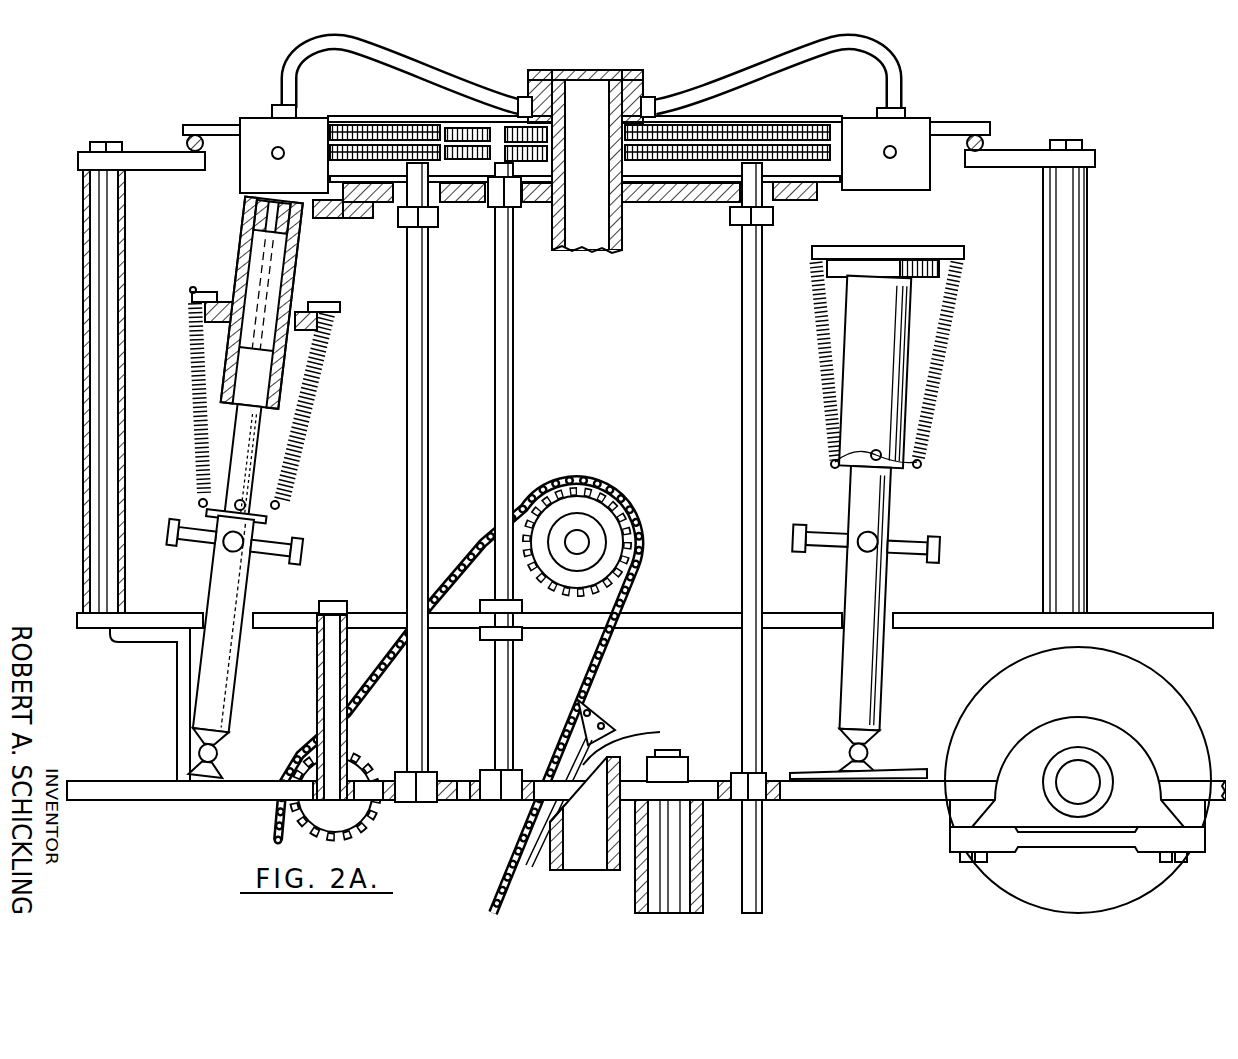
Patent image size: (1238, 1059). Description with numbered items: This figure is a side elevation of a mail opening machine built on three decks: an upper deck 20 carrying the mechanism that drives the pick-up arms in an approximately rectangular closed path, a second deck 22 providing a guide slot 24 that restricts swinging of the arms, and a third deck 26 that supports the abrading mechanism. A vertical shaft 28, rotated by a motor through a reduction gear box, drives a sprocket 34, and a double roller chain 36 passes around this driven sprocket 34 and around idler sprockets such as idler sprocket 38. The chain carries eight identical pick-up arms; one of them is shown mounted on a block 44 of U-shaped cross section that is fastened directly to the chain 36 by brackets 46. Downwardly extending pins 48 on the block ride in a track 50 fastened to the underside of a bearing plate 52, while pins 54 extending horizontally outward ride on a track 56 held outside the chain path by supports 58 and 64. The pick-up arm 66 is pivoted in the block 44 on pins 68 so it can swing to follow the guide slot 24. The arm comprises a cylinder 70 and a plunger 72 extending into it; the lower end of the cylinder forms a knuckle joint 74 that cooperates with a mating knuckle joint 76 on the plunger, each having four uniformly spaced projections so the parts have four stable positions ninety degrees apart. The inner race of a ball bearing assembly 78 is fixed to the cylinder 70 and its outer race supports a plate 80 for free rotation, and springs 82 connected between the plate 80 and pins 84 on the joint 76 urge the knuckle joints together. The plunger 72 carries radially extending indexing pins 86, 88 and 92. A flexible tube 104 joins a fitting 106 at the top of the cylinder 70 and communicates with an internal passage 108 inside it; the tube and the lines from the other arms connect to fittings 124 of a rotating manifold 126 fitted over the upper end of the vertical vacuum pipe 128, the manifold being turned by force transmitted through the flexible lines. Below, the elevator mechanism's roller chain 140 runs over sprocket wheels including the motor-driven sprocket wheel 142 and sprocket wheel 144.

The upper deck 20 is at (72, 130).
The second deck 22 is at (62, 600).
The guide slot 24 is at (848, 604).
The third deck 26 is at (112, 758).
The vertical shaft 28 is at (762, 375).
The driven sprocket 34 is at (842, 178).
The double roller chain 36 is at (660, 195).
The idler sprocket 38 is at (476, 192).
The block 44 is at (250, 155).
The brackets 46 is at (330, 142).
The downwardly extending pins 48 is at (325, 225).
The track 50 is at (359, 223).
The bearing plate 52 is at (518, 202).
The pins 54 is at (237, 124).
The track 56 is at (192, 152).
The support 58 is at (83, 270).
The support 64 is at (1086, 355).
The pick-up arm 66 is at (277, 492).
The pins 68 is at (285, 153).
The cylinder 70 is at (282, 305).
The plunger 72 is at (261, 649).
The knuckle joint 74 is at (278, 506).
The mating knuckle joint 76 is at (203, 505).
The ball bearing assembly 78 is at (322, 348).
The plate 80 is at (330, 303).
The springs 82 is at (199, 415).
The pins 84 is at (200, 501).
The indexing pin 86 is at (217, 565).
The indexing pin 88 is at (191, 553).
The indexing pin 92 is at (322, 548).
The flexible tube 104 is at (415, 78).
The fitting 106 is at (297, 108).
The internal passage 108 is at (237, 219).
The fittings 124 is at (527, 97).
The rotating manifold 126 is at (590, 75).
The vertical vacuum pipe 128 is at (622, 240).
The roller chain 140 is at (603, 658).
The sprocket wheel 142 is at (568, 482).
The sprocket wheel 144 is at (360, 766).